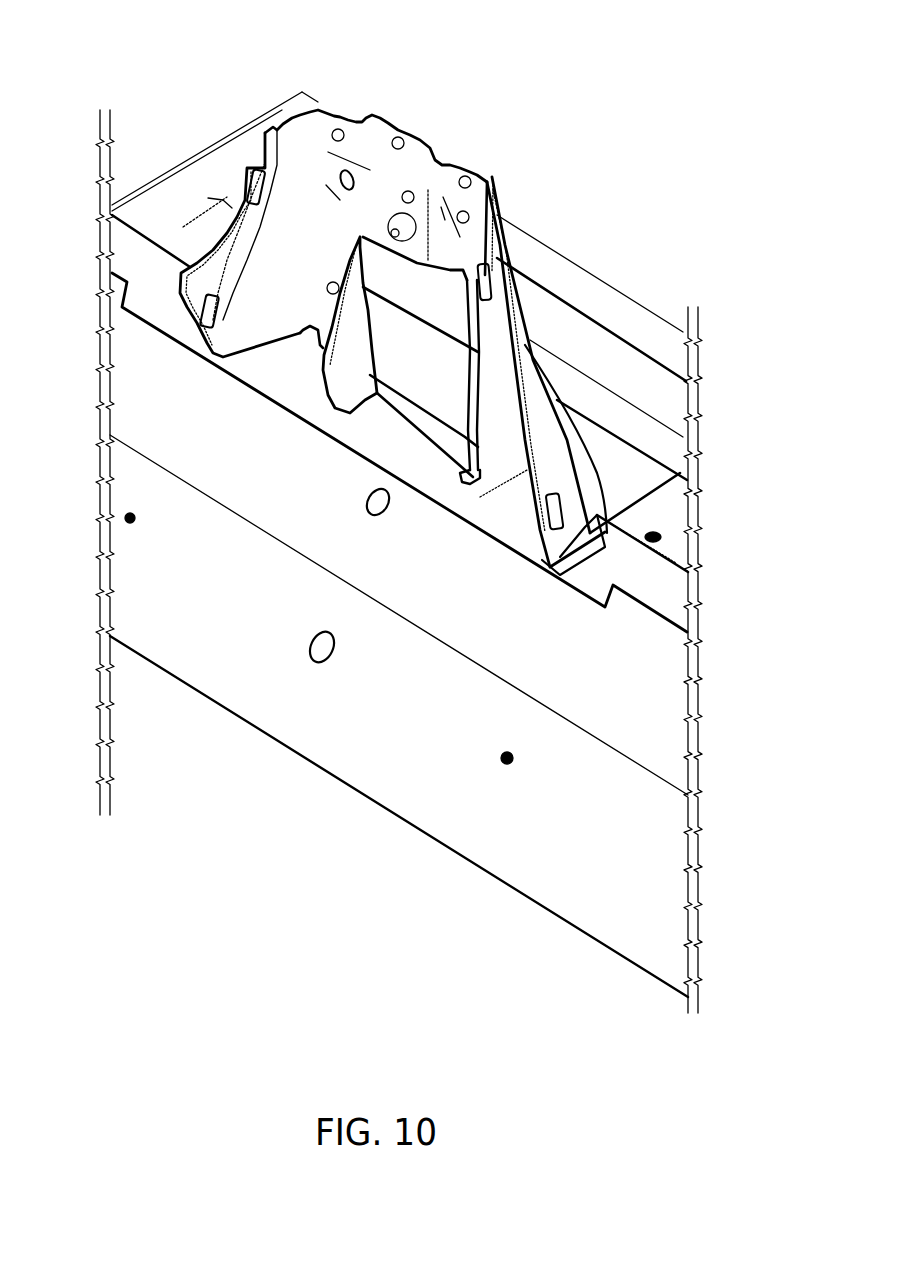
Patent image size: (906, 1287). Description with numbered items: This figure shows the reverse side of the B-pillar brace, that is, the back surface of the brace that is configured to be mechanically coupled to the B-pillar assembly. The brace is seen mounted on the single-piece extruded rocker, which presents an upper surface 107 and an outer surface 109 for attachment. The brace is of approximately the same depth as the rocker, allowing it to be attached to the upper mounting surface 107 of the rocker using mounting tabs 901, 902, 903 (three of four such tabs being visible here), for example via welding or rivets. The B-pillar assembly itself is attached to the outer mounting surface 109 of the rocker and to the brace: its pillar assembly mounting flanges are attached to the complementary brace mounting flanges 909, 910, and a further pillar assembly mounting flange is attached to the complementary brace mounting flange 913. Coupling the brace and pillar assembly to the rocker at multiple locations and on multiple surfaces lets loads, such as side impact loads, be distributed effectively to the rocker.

The upper surface 107 is at (305, 383).
The outer surface 109 is at (437, 718).
The mounting tab 901 is at (592, 540).
The mounting tab 902 is at (467, 473).
The mounting tab 903 is at (355, 397).
The brace mounting flange 909 is at (533, 467).
The brace mounting flange 910 is at (213, 275).
The brace mounting flange 913 is at (378, 135).